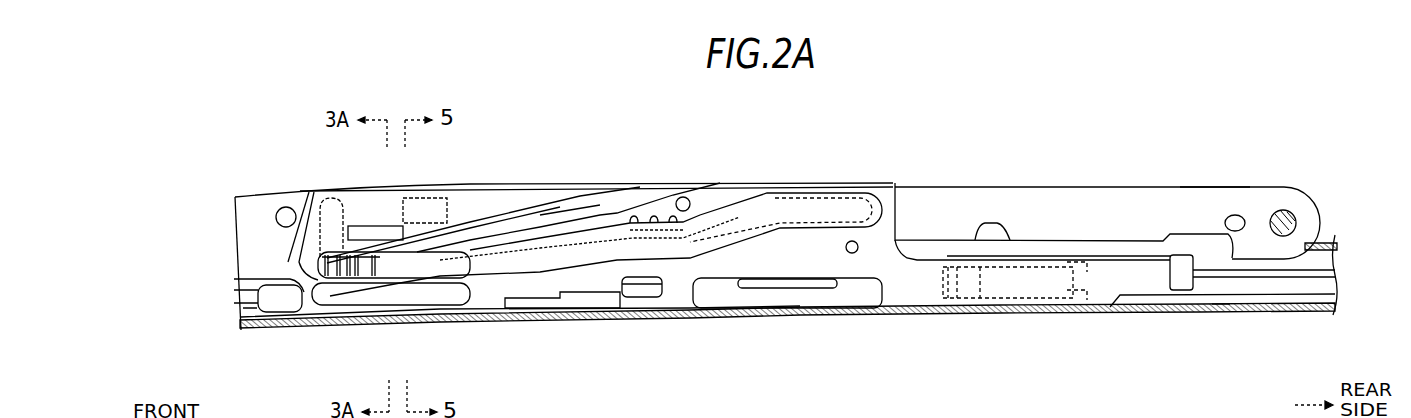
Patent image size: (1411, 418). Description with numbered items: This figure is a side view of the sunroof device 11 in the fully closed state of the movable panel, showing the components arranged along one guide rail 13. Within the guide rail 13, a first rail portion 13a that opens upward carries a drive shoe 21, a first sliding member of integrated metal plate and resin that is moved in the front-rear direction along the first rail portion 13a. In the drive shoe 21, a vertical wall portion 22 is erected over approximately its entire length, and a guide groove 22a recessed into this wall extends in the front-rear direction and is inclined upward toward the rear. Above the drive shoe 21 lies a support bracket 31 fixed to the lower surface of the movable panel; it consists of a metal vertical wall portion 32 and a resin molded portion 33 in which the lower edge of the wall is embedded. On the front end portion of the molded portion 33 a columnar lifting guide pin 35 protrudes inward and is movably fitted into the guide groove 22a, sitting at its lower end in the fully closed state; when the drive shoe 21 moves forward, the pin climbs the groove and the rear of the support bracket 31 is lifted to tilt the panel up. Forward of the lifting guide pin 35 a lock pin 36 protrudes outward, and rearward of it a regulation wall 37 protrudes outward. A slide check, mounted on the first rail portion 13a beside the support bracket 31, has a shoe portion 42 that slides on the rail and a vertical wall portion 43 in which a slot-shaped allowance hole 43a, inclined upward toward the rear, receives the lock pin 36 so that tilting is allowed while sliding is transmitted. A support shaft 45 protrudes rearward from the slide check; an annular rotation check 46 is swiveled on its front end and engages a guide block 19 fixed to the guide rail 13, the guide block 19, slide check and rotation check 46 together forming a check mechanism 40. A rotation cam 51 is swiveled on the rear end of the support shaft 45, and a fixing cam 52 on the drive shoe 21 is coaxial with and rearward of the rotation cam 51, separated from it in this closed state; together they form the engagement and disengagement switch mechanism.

The sunroof device 11 is at (627, 134).
The guide rail 13 is at (1278, 311).
The first rail portion 13a is at (1222, 306).
The guide block 19 is at (568, 203).
The drive shoe 21 is at (898, 210).
The vertical wall portion 22 is at (606, 243).
The guide groove 22a is at (609, 214).
The support bracket 31 is at (1147, 185).
The vertical wall portion 32 is at (1189, 194).
The molded portion 33 is at (1177, 296).
The lifting guide pin 35 is at (391, 322).
The lock pin 36 is at (520, 334).
The regulation wall 37 is at (440, 186).
The check mechanism 40 is at (440, 326).
The shoe portion 42 is at (259, 330).
The vertical wall portion 43 is at (305, 188).
The allowance hole 43a is at (338, 192).
The support shaft 45 is at (523, 223).
The rotation check 46 is at (394, 238).
The rotation cam 51 is at (532, 312).
The fixing cam 52 is at (1012, 238).